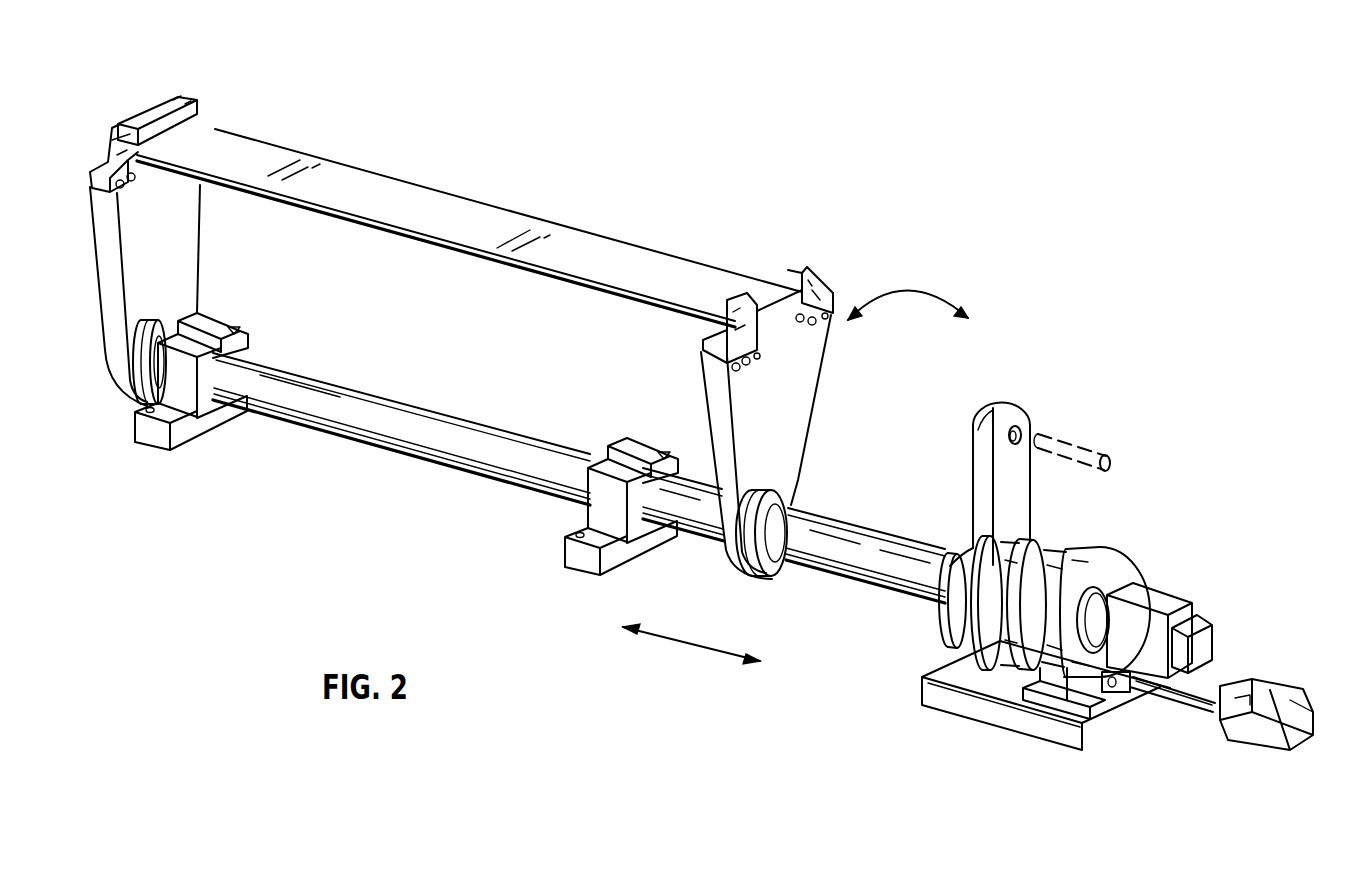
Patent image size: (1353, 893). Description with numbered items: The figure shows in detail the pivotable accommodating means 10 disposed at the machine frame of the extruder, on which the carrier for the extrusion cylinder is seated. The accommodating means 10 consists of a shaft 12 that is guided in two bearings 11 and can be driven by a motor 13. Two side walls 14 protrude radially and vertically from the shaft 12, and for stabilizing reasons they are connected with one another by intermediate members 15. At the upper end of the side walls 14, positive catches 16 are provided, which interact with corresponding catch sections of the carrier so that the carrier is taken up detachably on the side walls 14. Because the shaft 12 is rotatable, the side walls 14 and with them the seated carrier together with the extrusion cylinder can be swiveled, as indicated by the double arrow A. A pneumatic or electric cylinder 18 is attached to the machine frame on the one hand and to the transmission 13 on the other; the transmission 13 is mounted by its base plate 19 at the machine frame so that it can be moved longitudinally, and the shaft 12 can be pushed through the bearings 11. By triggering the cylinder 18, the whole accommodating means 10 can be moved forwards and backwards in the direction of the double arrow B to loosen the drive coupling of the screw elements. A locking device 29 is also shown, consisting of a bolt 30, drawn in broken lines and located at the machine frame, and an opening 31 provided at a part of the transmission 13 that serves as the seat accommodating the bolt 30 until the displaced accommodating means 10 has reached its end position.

The accommodating means 10 is at (748, 190).
The bearings 11 is at (204, 424).
The shaft 12 is at (385, 446).
The motor 13 is at (1107, 551).
The side walls 14 is at (197, 273).
The intermediate members 15 is at (484, 222).
The positive catches 16 is at (103, 152).
The pneumatic or electric cylinder 18 is at (1193, 706).
The base plate 19 is at (1000, 720).
The locking device 29 is at (1082, 409).
The bolt 30 is at (1090, 445).
The opening 31 is at (1020, 428).
The double arrow A is at (934, 292).
The double arrow B is at (680, 648).